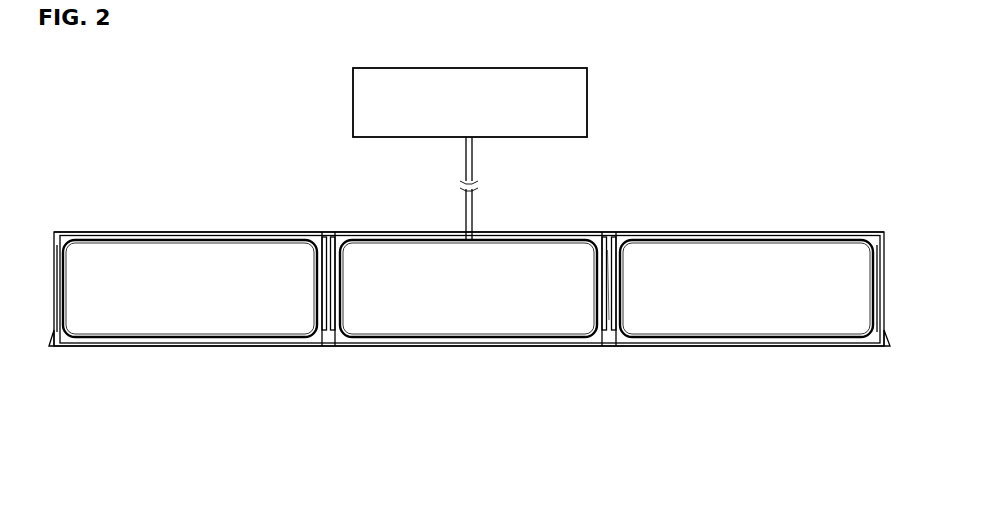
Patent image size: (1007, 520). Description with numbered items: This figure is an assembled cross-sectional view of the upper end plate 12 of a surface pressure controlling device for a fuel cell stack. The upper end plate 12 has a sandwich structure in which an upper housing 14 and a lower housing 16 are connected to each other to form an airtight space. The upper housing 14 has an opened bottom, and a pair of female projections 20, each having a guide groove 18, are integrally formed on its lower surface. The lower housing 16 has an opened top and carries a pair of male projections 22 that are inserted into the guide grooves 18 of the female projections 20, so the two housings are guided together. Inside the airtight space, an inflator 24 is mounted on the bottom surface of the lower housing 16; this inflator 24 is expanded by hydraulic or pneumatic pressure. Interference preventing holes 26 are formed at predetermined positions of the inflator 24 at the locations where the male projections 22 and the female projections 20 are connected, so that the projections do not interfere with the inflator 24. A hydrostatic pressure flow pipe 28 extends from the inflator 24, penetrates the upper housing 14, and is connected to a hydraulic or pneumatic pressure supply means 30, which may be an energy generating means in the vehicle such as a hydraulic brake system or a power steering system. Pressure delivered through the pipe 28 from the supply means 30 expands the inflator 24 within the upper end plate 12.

The upper end plate 12 is at (752, 222).
The upper housing 14 is at (830, 235).
The lower housing 16 is at (657, 343).
The guide groove 18 is at (604, 236).
The female projection 20 is at (630, 238).
The male projection 22 is at (608, 305).
The inflator 24 is at (174, 228).
The interference preventing hole 26 is at (340, 238).
The hydrostatic pressure flow pipe 28 is at (471, 213).
The hydraulic or pneumatic pressure supply means 30 is at (353, 89).